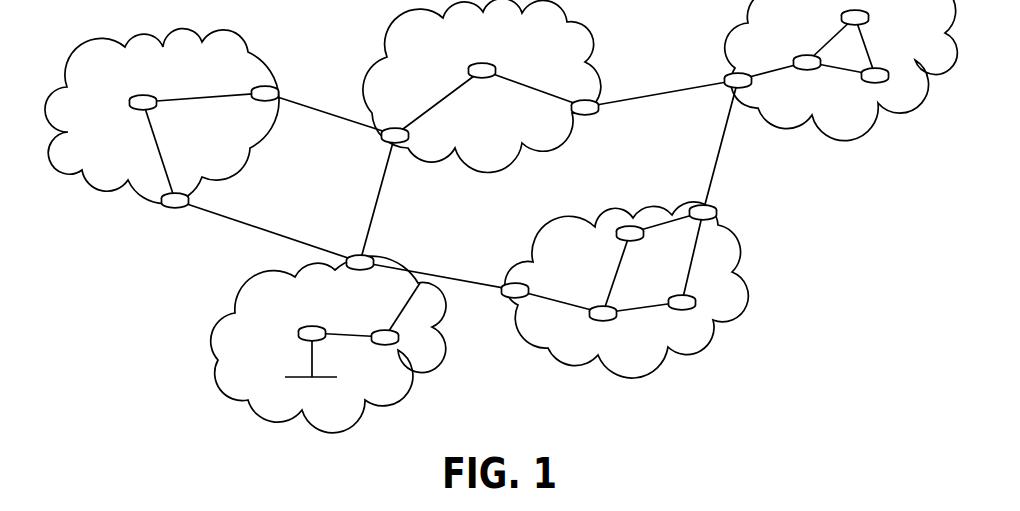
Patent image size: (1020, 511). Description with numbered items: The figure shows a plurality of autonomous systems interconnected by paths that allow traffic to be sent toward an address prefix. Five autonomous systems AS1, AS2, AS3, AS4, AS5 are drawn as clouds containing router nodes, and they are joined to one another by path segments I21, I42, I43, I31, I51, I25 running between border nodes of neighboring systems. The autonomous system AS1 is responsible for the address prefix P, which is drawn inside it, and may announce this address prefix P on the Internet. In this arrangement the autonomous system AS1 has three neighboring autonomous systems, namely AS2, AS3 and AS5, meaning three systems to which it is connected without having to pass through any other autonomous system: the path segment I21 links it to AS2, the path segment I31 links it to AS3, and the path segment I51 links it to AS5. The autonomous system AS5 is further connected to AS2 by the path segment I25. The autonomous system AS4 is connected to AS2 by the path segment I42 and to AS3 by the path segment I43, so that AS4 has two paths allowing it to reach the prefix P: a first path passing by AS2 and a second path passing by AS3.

The autonomous system AS1 is at (328, 344).
The autonomous system AS2 is at (482, 86).
The autonomous system AS3 is at (625, 290).
The autonomous system AS4 is at (841, 70).
The autonomous system AS5 is at (162, 118).
The path segment I25 is at (330, 107).
The path segment I51 is at (267, 230).
The path segment I21 is at (389, 198).
The path segment I31 is at (437, 288).
The path segment I42 is at (661, 84).
The path segment I43 is at (733, 146).
The address prefix P is at (311, 372).